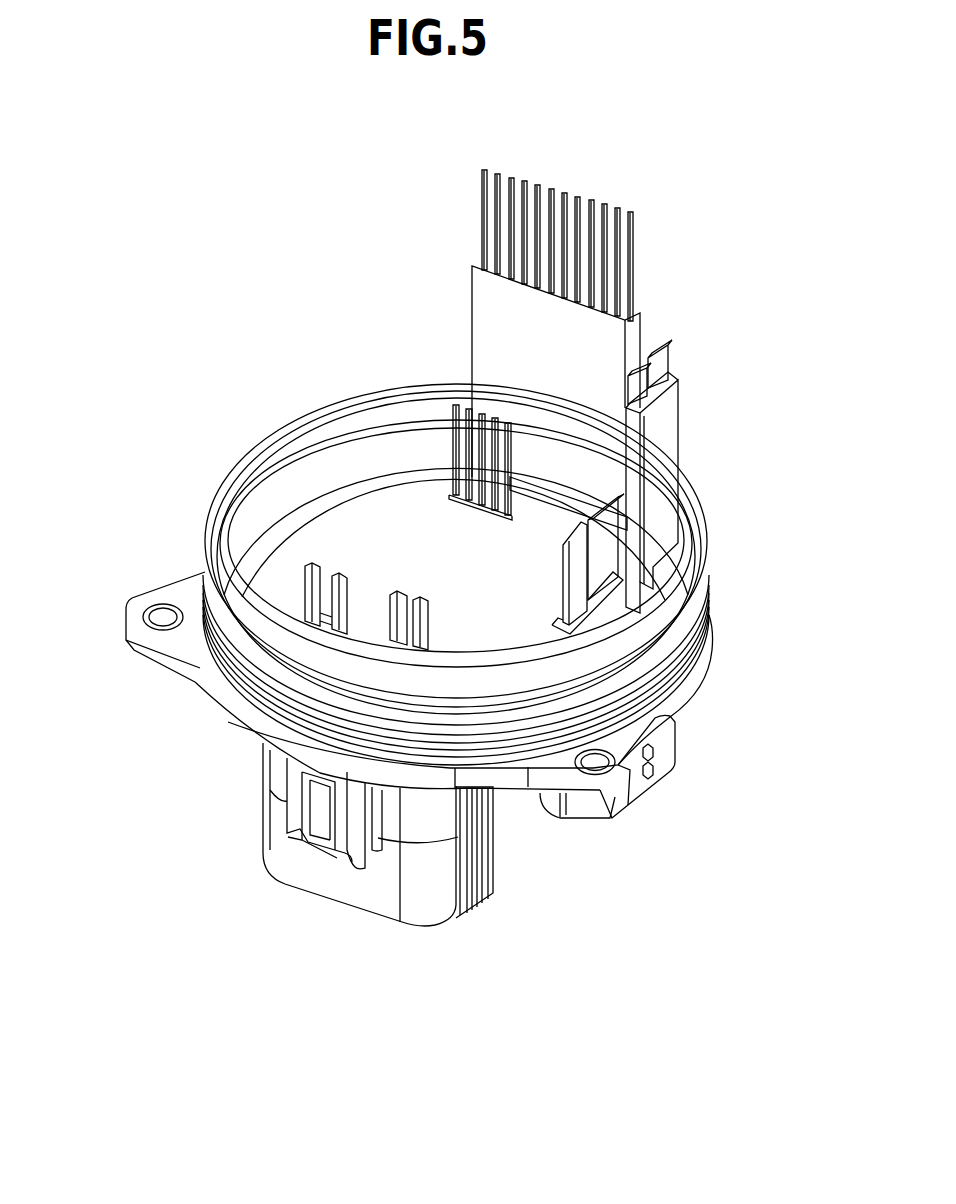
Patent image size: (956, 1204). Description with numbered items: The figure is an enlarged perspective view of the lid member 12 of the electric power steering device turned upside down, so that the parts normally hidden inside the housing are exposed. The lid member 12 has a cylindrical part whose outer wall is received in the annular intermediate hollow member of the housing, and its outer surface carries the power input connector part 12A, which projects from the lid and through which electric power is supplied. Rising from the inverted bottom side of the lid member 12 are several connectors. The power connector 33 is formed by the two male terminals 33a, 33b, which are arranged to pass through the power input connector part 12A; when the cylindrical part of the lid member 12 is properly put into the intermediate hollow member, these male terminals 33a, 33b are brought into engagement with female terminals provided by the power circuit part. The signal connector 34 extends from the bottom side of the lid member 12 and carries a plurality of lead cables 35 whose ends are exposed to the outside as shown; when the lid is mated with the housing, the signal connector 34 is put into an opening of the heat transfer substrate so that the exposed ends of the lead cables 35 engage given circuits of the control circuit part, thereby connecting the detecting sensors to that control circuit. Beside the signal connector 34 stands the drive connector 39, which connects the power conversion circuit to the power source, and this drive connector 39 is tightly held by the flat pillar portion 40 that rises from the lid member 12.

The lid member 12 is at (190, 697).
The power input connector part 12A is at (425, 925).
The power connector 33 is at (100, 422).
The male terminal 33a is at (312, 590).
The male terminal 33b is at (393, 593).
The signal connector 34 is at (492, 336).
The lead cables 35 is at (636, 244).
The drive connector 39 is at (660, 367).
The flat pillar portion 40 is at (665, 447).